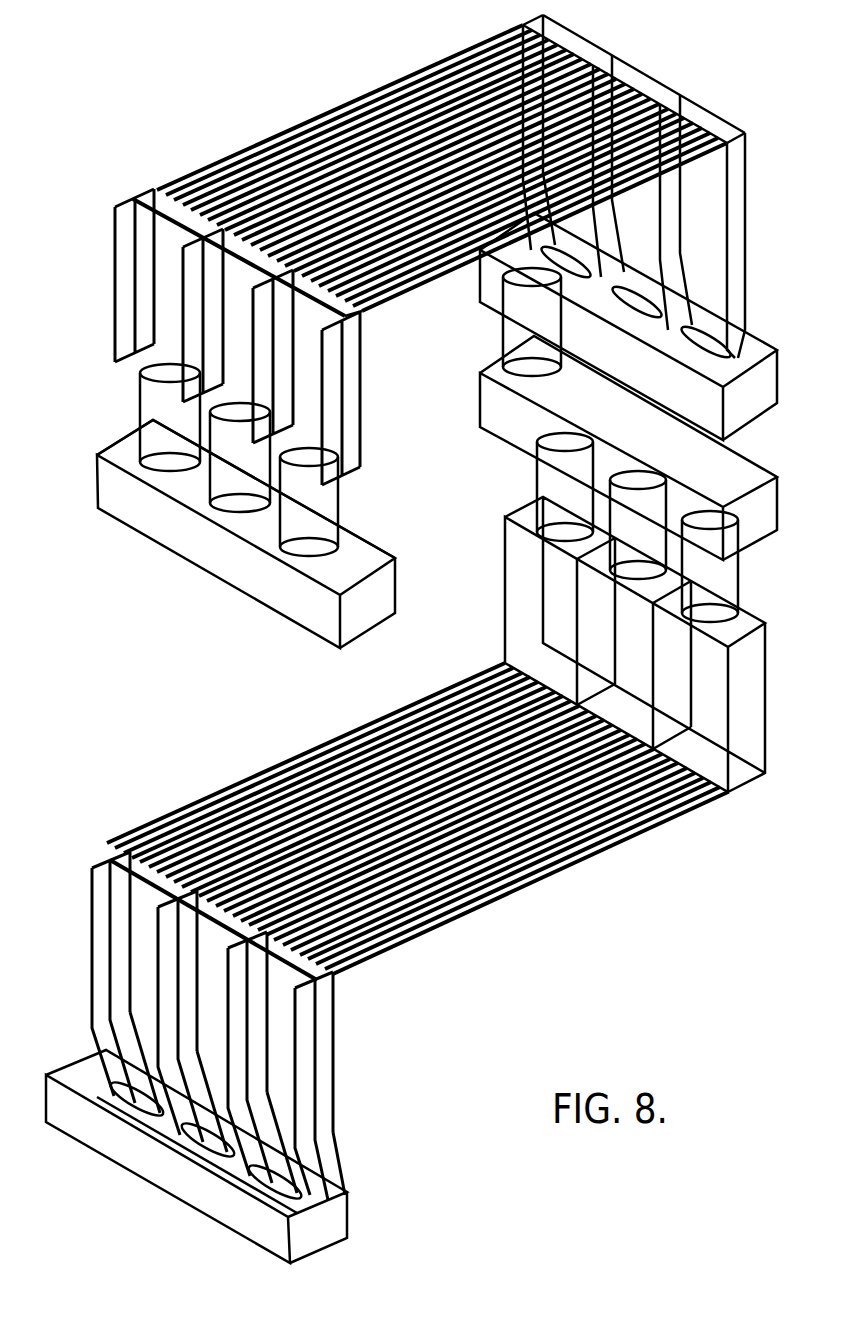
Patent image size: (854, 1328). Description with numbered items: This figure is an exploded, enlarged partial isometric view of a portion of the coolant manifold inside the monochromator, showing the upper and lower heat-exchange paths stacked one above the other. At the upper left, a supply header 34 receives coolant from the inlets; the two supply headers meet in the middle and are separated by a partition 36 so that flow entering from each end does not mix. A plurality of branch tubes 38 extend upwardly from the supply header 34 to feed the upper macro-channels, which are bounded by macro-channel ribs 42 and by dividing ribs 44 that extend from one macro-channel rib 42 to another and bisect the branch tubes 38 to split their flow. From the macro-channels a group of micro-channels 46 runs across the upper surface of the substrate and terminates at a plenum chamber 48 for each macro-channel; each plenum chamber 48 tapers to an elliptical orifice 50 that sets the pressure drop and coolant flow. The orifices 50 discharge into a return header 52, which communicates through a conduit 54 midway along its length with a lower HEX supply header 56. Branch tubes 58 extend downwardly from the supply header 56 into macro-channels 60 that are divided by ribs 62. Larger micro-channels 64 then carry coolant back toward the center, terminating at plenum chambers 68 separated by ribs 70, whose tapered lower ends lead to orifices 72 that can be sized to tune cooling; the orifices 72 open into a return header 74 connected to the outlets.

The supply header 34 is at (370, 548).
The partition 36 is at (105, 448).
The branch tube 38 is at (142, 412).
The macro-channel rib 42 is at (117, 302).
The dividing rib 44 is at (175, 265).
The micro-channel 46 is at (300, 137).
The plenum chamber 48 is at (572, 38).
The orifice 50 is at (505, 275).
The return header 52 is at (778, 348).
The conduit 54 is at (503, 345).
The lower HEX supply header 56 is at (762, 465).
The branch tube 58 is at (545, 493).
The macro-channel 60 is at (573, 598).
The rib 62 is at (503, 653).
The micro-channel 64 is at (620, 840).
The plenum chamber 68 is at (135, 868).
The rib 70 is at (157, 1000).
The orifice 72 is at (102, 1097).
The return header 74 is at (188, 1188).